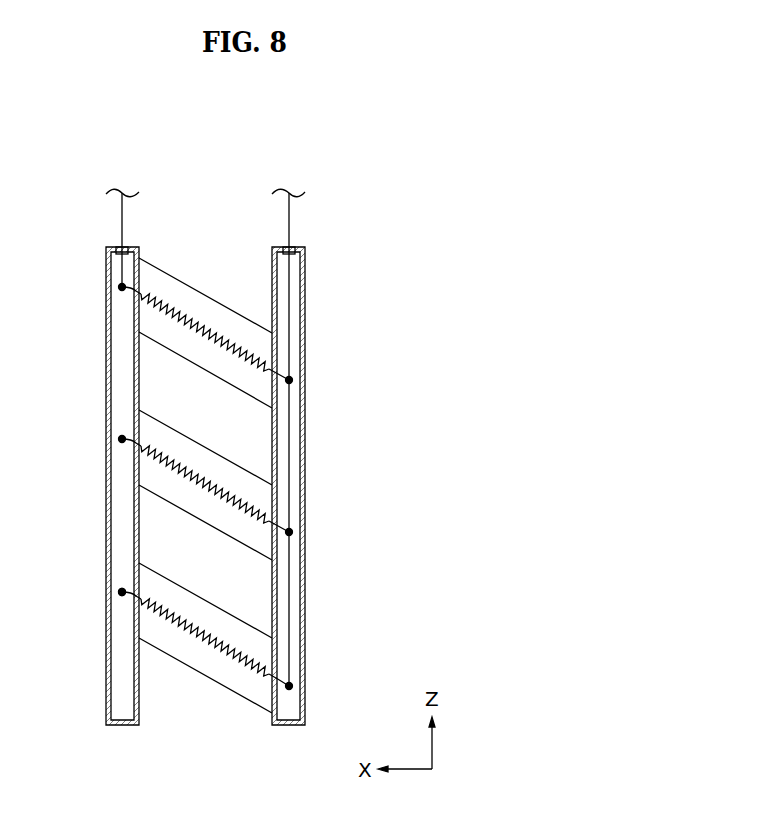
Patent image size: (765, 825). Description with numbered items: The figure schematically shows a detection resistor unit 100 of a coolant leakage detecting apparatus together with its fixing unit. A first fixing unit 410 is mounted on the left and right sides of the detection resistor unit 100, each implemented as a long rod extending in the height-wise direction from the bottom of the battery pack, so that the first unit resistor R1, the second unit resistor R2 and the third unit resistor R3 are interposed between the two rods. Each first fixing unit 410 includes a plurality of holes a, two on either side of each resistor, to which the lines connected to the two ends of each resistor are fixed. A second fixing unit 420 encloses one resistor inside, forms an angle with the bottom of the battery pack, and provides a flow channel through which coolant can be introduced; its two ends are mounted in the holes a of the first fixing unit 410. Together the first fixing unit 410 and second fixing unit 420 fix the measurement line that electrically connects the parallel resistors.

The detection resistor unit 100 is at (109, 130).
The first fixing unit 410 is at (106, 293).
The second fixing unit 420 is at (206, 485).
The hole a is at (122, 592).
The first unit resistor R1 is at (206, 638).
The second unit resistor R2 is at (206, 485).
The third unit resistor R3 is at (206, 333).